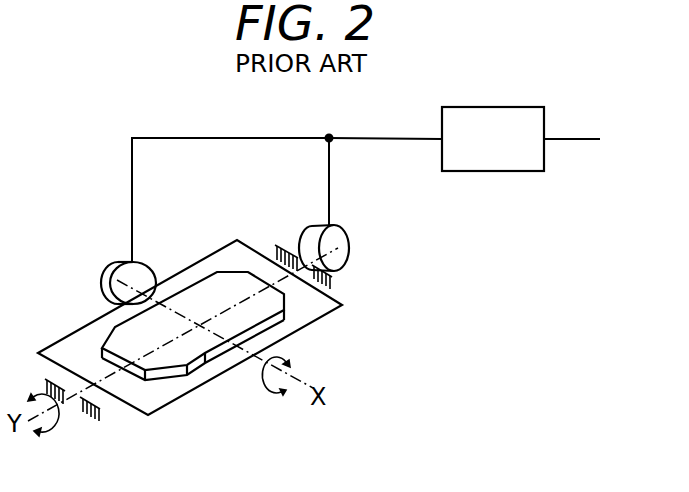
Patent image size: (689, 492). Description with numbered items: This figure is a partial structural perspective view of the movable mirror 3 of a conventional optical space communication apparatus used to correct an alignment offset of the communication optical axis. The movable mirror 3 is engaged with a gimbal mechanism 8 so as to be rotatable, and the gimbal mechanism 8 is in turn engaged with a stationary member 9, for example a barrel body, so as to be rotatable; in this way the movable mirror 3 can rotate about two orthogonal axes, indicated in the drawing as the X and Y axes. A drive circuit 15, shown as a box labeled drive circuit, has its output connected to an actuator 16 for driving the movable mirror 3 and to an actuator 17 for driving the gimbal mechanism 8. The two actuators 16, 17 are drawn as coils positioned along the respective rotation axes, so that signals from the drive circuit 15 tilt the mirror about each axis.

The movable mirror 3 is at (197, 352).
The gimbal mechanism 8 is at (307, 330).
The stationary member 9 is at (337, 288).
The drive circuit 15 is at (523, 107).
The actuator 16 is at (140, 262).
The actuator 17 is at (349, 250).